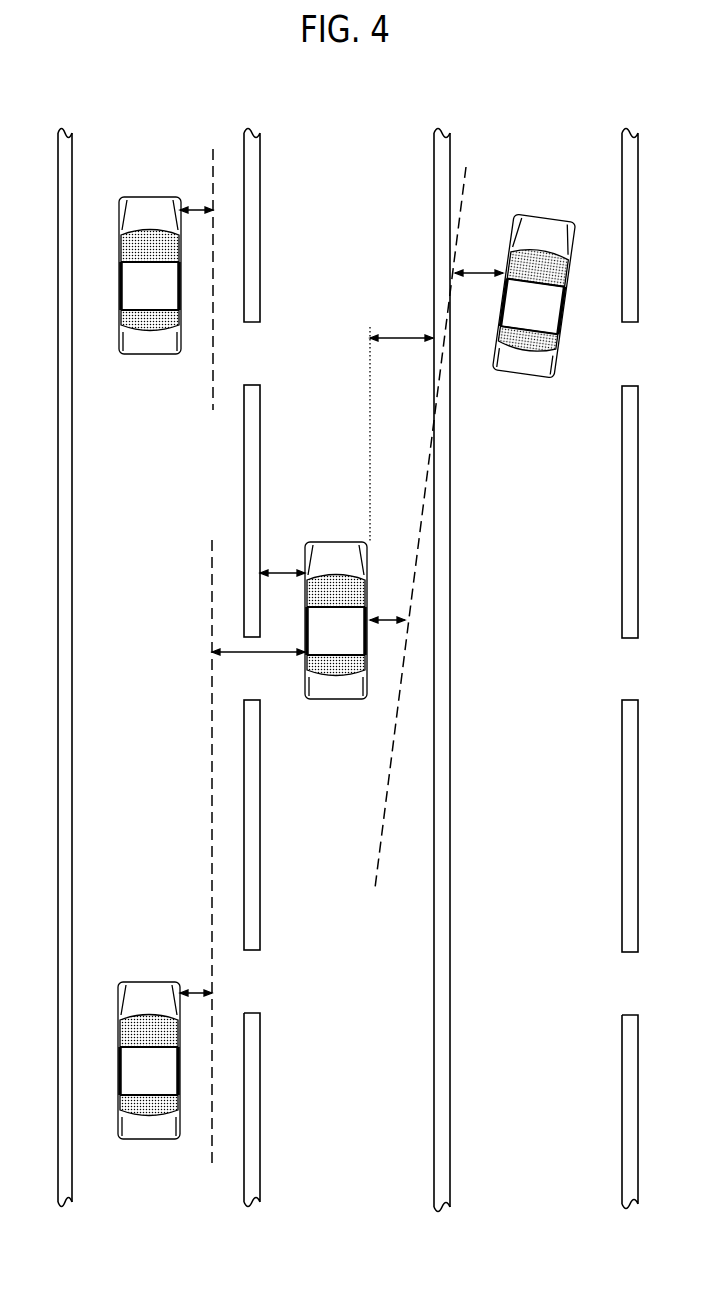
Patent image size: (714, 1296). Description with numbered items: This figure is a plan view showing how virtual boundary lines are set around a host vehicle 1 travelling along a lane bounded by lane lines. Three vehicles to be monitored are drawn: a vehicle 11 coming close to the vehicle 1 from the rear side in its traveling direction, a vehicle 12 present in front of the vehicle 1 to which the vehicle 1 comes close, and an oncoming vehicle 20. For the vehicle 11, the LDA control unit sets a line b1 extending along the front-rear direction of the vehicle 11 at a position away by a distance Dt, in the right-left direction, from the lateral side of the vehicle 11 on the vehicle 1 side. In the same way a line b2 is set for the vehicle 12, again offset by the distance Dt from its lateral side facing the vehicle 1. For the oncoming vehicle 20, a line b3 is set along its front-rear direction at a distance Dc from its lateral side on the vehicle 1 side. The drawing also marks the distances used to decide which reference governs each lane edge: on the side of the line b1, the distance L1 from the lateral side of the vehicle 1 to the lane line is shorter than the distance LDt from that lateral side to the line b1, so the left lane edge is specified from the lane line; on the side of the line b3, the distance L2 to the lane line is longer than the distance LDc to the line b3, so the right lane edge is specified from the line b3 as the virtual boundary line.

The vehicle 1 is at (321, 693).
The vehicle 11 is at (134, 980).
The vehicle 12 is at (134, 197).
The oncoming vehicle 20 is at (545, 216).
The line b1 is at (212, 853).
The line b2 is at (213, 385).
The line b3 is at (466, 180).
The distance Dt is at (196, 582).
The distance Dc is at (479, 257).
The distance L1 is at (282, 555).
The distance L2 is at (401, 320).
The distance LDt is at (258, 668).
The distance LDc is at (396, 612).